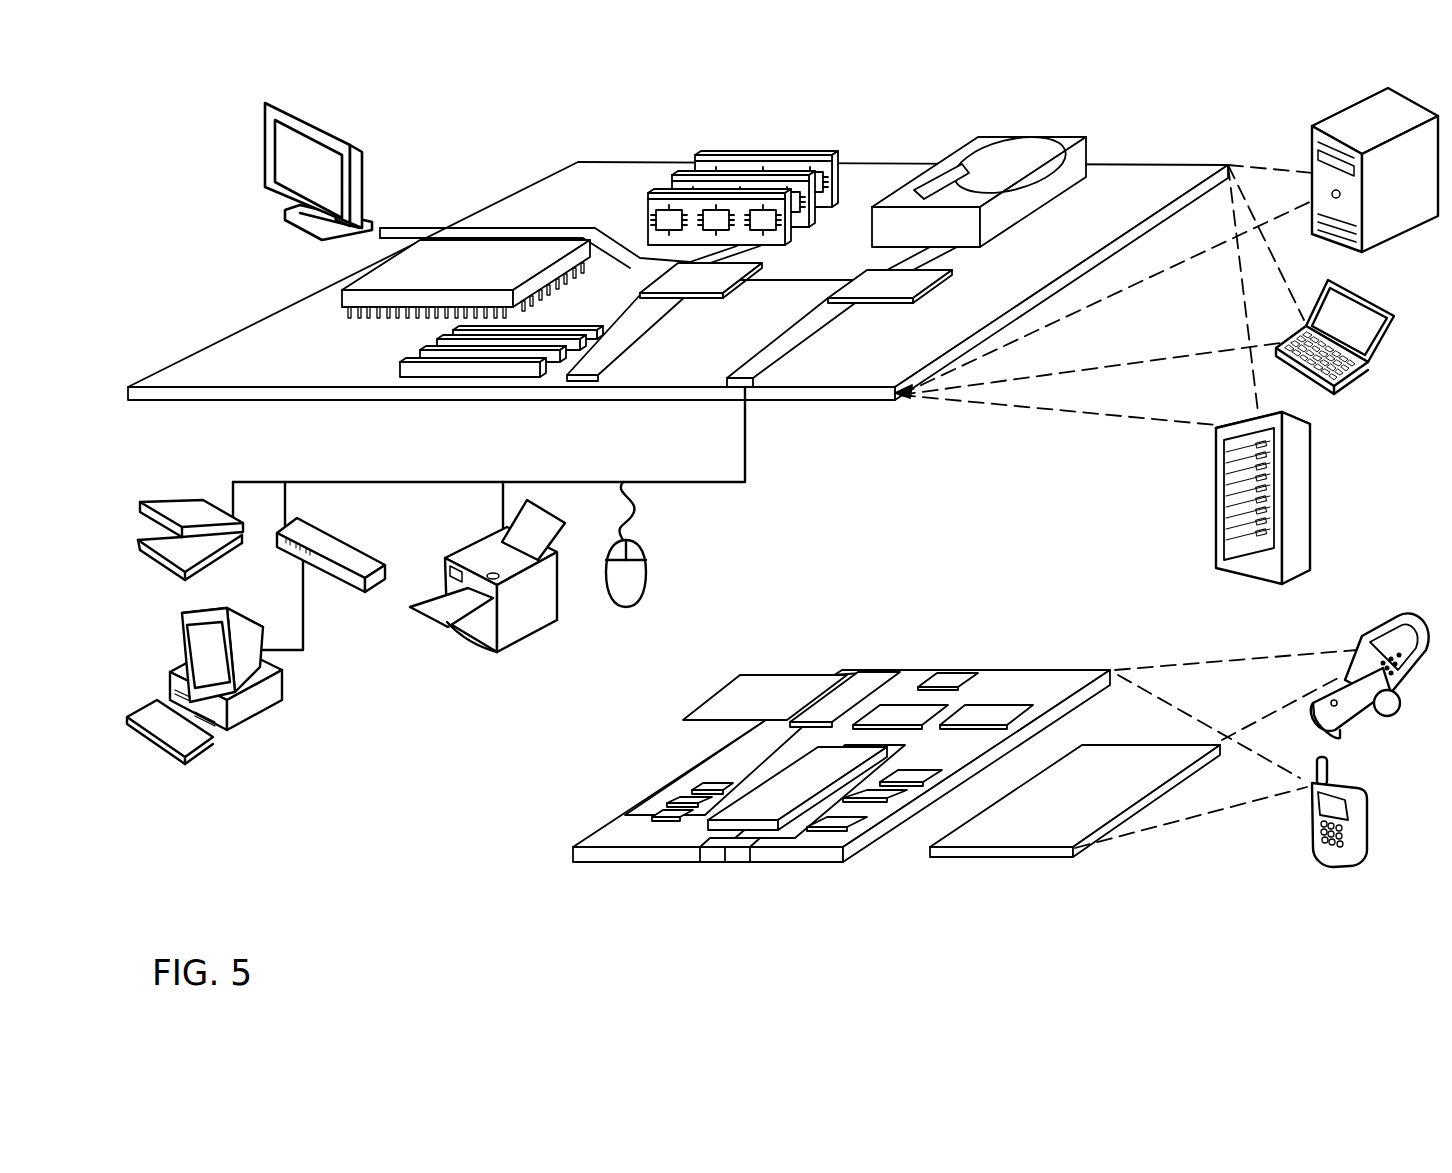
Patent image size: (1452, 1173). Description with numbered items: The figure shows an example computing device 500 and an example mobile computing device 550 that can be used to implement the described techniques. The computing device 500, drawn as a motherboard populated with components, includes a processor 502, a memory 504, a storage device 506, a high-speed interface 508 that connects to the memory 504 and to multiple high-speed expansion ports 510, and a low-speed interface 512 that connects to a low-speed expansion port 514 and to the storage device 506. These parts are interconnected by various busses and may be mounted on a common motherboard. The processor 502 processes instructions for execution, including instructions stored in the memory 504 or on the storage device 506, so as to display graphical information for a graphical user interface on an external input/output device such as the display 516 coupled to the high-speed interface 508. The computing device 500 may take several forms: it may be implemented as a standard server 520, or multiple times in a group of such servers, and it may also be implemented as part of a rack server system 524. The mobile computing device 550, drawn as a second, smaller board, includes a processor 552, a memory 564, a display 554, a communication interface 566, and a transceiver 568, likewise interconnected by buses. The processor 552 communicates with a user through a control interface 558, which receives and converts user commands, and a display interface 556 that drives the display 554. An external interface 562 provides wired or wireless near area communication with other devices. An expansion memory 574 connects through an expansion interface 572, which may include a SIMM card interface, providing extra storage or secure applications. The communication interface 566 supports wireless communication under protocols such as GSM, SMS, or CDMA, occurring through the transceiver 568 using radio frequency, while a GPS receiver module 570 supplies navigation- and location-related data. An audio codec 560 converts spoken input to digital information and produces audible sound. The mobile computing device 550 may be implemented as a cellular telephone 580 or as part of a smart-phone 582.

The computing device 500 is at (487, 132).
The processor 502 is at (353, 295).
The memory 504 is at (703, 152).
The storage device 506 is at (973, 141).
The high-speed interface 508 is at (673, 273).
The high-speed expansion ports 510 is at (427, 355).
The low-speed interface 512 is at (867, 280).
The low-speed expansion port 514 is at (753, 386).
The display 516 is at (267, 102).
The standard server 520 is at (1314, 146).
The rack server system 524 is at (1216, 522).
The mobile computing device 550 is at (542, 860).
The processor 552 is at (770, 813).
The display 554 is at (1030, 833).
The display interface 556 is at (843, 830).
The control interface 558 is at (887, 803).
The audio codec 560 is at (908, 777).
The external interface 562 is at (730, 850).
The memory 564 is at (670, 805).
The communication interface 566 is at (900, 710).
The transceiver 568 is at (987, 713).
The GPS receiver module 570 is at (957, 672).
The expansion interface 572 is at (819, 687).
The expansion memory 574 is at (741, 687).
The cellular telephone 580 is at (1373, 636).
The smart-phone 582 is at (1310, 818).